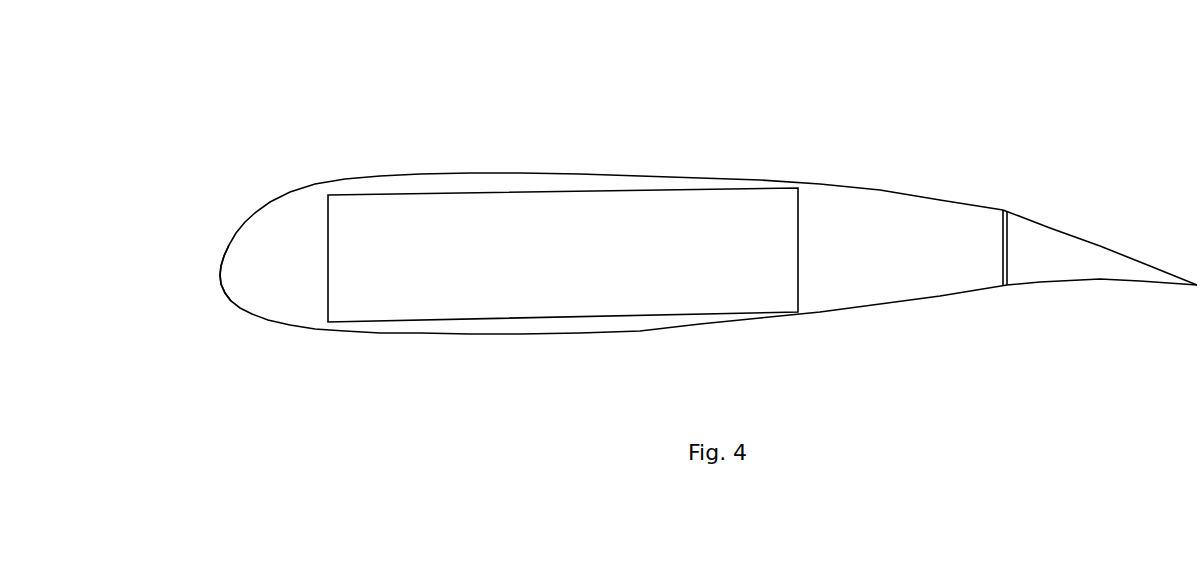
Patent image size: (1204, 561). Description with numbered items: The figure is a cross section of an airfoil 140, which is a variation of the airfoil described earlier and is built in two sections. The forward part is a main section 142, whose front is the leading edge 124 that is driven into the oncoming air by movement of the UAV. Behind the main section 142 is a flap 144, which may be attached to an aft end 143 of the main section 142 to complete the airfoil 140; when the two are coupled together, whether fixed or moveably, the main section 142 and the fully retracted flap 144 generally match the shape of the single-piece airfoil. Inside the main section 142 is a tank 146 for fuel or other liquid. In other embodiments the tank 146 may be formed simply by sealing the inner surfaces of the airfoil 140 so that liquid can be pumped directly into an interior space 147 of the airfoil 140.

The airfoil 140 is at (747, 56).
The main section 142 is at (679, 148).
The leading edge 124 is at (220, 275).
The interior space 147 is at (847, 275).
The flap 144 is at (1091, 207).
The aft end 143 is at (1000, 238).
The tank 146 is at (572, 315).